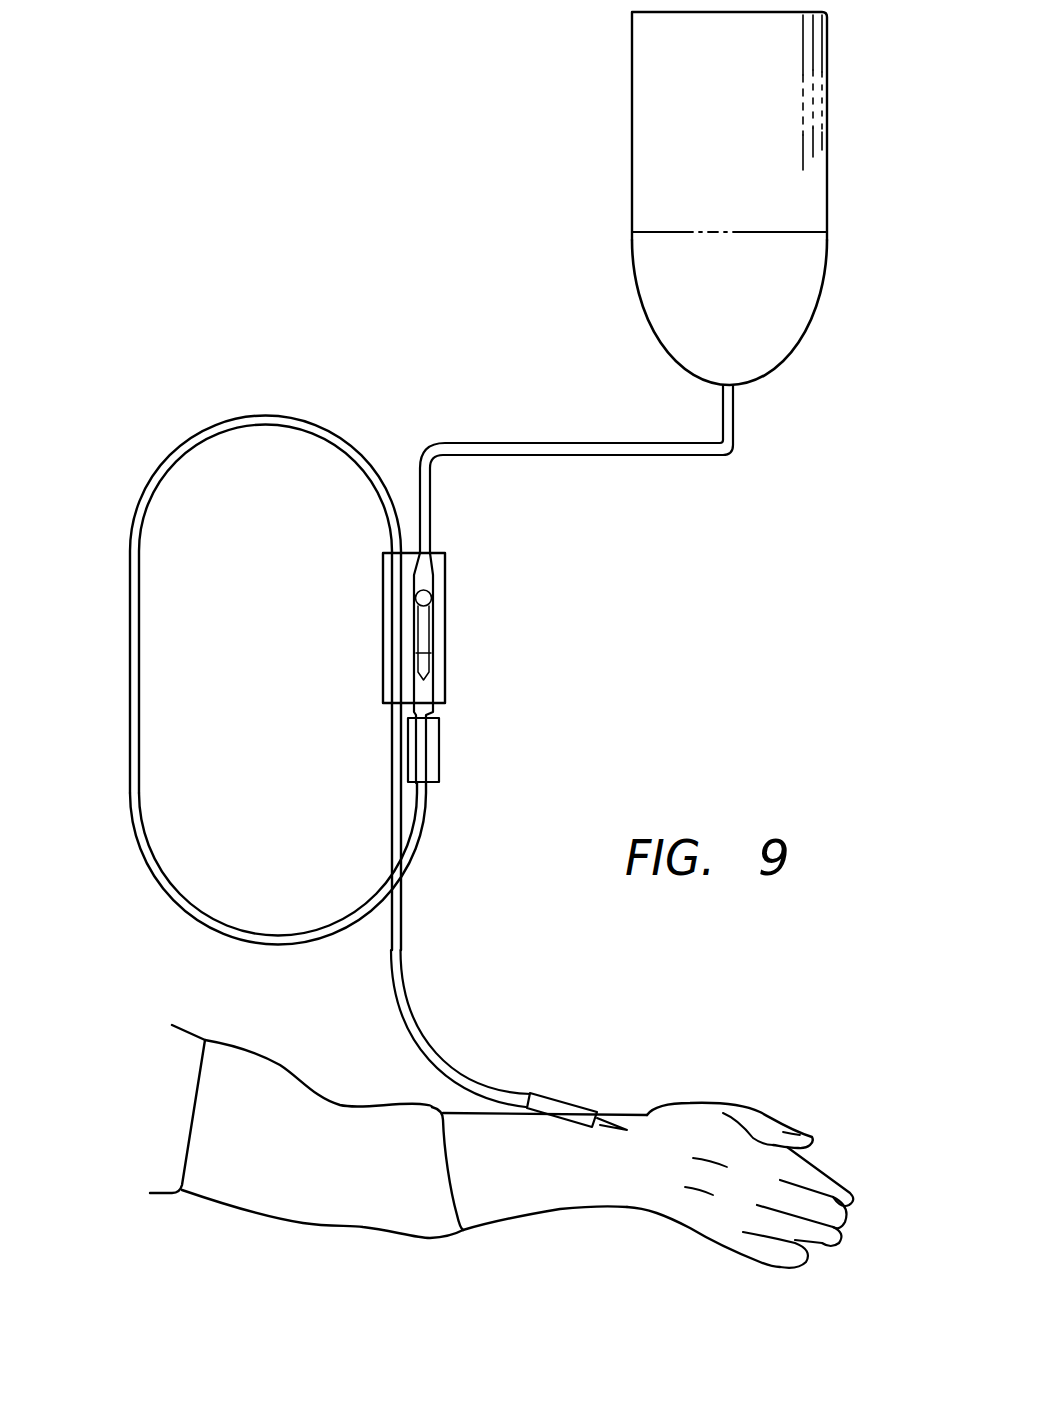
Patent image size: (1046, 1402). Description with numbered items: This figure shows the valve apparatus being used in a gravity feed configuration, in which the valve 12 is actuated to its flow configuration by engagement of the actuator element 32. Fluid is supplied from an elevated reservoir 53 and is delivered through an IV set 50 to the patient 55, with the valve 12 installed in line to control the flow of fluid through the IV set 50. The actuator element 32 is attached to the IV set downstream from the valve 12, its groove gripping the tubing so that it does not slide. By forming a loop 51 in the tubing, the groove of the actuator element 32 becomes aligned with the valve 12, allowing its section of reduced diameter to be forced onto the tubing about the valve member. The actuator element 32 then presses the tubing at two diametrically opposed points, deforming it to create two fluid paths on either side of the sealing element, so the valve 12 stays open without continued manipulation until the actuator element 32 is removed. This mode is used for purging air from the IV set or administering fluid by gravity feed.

The valve 12 is at (480, 658).
The actuator element 32 is at (445, 588).
The IV set 50 is at (542, 442).
The loop 51 is at (196, 648).
The elevated reservoir 53 is at (662, 122).
The patient 55 is at (353, 1130).